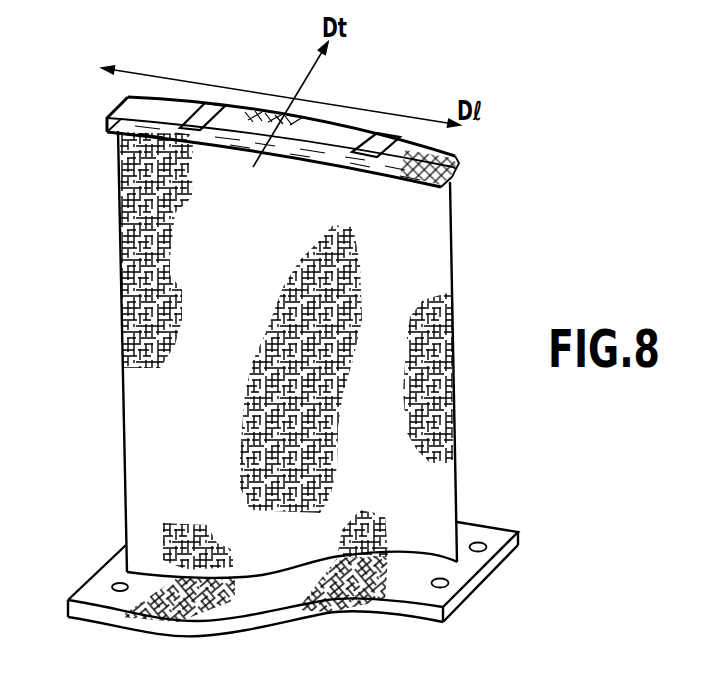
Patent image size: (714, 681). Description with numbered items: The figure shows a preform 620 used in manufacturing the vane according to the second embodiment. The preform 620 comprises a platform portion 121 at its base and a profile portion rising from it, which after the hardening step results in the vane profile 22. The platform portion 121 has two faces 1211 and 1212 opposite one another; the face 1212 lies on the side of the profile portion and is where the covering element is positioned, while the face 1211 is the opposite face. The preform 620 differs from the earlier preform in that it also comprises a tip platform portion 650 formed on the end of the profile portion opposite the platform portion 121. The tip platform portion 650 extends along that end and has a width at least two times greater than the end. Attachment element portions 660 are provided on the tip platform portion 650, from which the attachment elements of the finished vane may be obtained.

The profile 22 is at (118, 206).
The preform 620 is at (103, 328).
The tip platform portion 650 is at (443, 153).
The attachment element portions 660 is at (213, 102).
The platform portion 121 is at (84, 568).
The face 1211 is at (277, 622).
The face 1212 is at (188, 616).